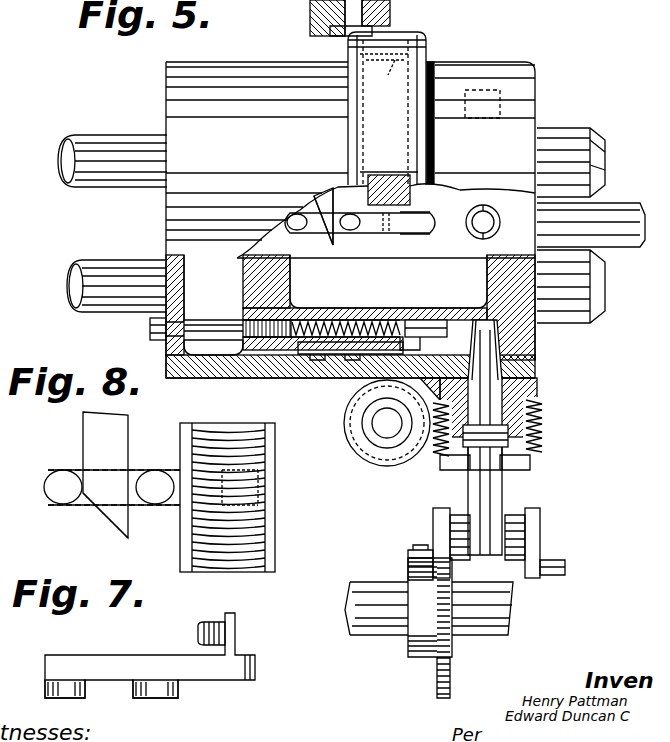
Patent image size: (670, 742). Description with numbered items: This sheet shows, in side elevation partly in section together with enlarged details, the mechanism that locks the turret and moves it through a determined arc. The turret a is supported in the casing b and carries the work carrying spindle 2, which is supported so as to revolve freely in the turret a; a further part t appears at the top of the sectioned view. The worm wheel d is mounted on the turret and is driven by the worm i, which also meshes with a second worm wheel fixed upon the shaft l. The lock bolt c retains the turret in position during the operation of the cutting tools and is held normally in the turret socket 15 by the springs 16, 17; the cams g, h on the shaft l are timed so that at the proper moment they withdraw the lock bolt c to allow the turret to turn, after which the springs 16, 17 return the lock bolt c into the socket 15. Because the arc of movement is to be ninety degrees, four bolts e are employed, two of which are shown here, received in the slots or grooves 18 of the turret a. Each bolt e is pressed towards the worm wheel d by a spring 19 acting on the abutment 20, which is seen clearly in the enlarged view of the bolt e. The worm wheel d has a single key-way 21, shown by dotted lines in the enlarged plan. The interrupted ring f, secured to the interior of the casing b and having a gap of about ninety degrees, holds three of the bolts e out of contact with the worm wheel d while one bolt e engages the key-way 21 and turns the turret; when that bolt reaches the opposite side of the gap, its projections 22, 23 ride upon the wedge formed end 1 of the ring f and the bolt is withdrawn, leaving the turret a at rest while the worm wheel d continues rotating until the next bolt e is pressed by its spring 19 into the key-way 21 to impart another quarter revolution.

In FIG. 5, the turret a is at (322, 320).
In FIG. 5, the casing b is at (515, 72).
In FIG. 5, the locking bolt c is at (505, 492).
In FIG. 5, the worm wheel d is at (426, 50).
In FIG. 8, the worm wheel d is at (258, 455).
In FIG. 5, the bolt e is at (362, 250).
In FIG. 8, the bolt e is at (135, 472).
In FIG. 7, the bolt e is at (126, 660).
In FIG. 5, the interrupted ring f is at (323, 216).
In FIG. 8, the interrupted ring f is at (105, 475).
In FIG. 5, the cam g is at (436, 522).
In FIG. 5, the cam h is at (540, 523).
In FIG. 5, the worm i is at (384, 466).
In FIG. 5, the shaft l is at (380, 635).
In FIG. 5, the upper fitting t is at (395, 8).
In FIG. 5, the wedge formed end 1 is at (323, 232).
In FIG. 8, the wedge formed end 1 is at (108, 521).
In FIG. 5, the work carrying spindle 2 is at (605, 150).
In FIG. 5, the turret socket 15 is at (500, 340).
In FIG. 5, the spring 16 is at (436, 455).
In FIG. 5, the spring 17 is at (543, 427).
In FIG. 5, the slots or grooves 18 is at (430, 232).
In FIG. 5, the spring 19 is at (400, 320).
In FIG. 5, the abutment 20 is at (425, 320).
In FIG. 7, the abutment 20 is at (236, 636).
In FIG. 5, the key-way 21 is at (380, 320).
In FIG. 5, the projection 22 is at (300, 232).
In FIG. 8, the projection 22 is at (58, 505).
In FIG. 7, the projection 22 is at (62, 700).
In FIG. 5, the projection 23 is at (352, 233).
In FIG. 8, the projection 23 is at (155, 505).
In FIG. 7, the projection 23 is at (160, 700).